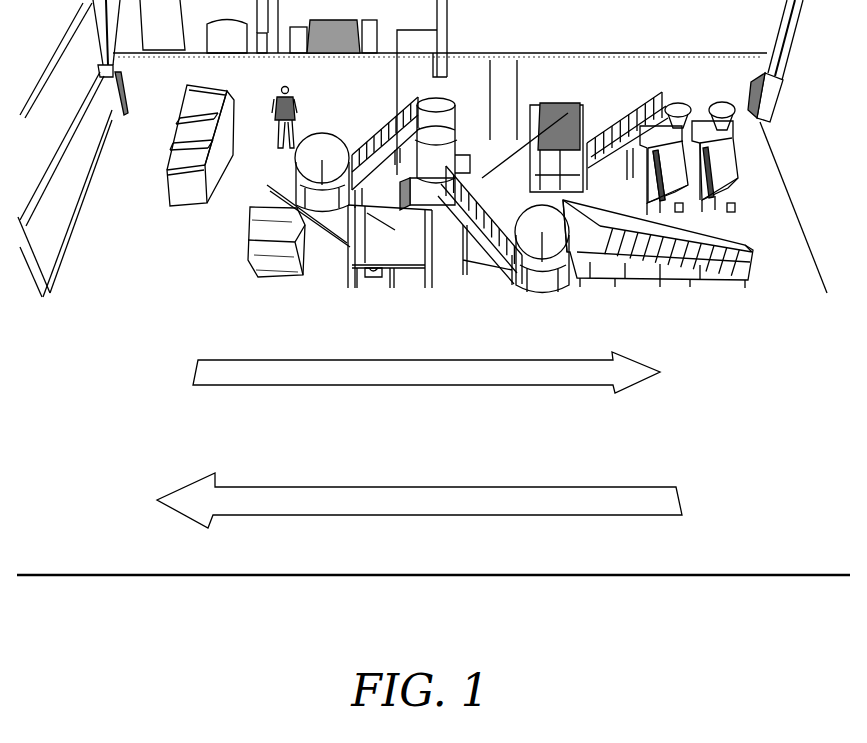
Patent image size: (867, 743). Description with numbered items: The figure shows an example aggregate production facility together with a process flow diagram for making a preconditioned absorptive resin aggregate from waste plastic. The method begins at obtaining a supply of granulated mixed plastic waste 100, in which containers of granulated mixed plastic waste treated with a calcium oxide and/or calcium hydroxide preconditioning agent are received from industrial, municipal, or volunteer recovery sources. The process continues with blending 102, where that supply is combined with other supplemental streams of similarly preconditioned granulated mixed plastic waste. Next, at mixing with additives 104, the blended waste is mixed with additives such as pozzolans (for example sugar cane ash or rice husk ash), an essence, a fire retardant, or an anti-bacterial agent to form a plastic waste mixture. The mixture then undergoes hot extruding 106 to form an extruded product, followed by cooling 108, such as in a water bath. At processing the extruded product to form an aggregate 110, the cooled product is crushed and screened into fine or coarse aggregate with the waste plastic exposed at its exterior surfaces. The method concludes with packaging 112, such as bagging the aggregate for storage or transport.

The obtaining a supply of granulated mixed plastic waste 100 is at (190, 225).
The blending 102 is at (343, 226).
The mixing with additives 104 is at (491, 227).
The hot extruding 106 is at (614, 266).
The cooling 108 is at (658, 333).
The processing the extruded product to form an aggregate 110 is at (456, 316).
The packaging 112 is at (292, 336).